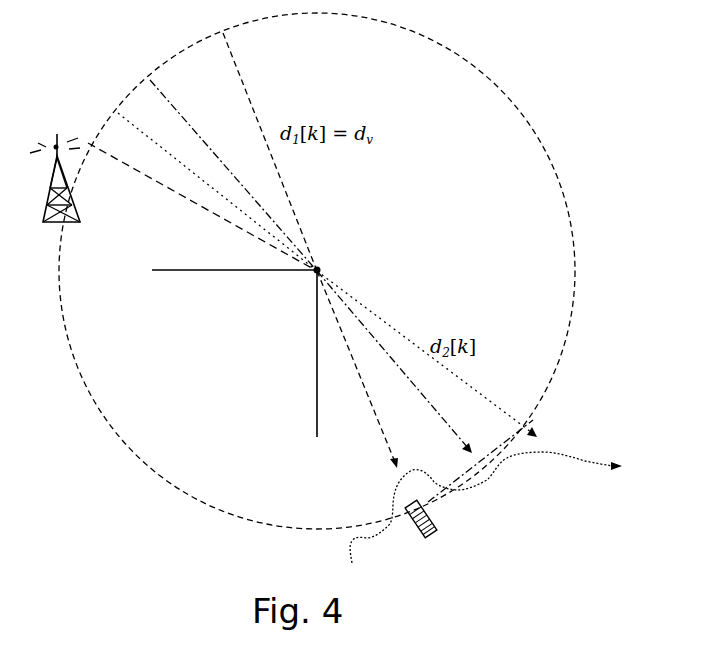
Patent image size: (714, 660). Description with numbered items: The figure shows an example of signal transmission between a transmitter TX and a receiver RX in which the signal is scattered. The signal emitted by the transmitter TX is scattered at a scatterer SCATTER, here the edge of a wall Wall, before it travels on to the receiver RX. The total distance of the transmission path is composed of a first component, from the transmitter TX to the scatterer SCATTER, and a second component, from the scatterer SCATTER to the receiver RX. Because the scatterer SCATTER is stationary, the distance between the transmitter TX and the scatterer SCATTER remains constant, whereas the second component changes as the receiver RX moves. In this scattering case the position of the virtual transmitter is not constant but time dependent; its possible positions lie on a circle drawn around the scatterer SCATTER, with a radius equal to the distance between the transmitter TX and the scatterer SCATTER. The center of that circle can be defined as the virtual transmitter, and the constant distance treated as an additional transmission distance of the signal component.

The transmitter TX is at (52, 201).
The receiver RX is at (450, 519).
The scatterer SCATTER is at (408, 259).
The wall Wall is at (234, 353).